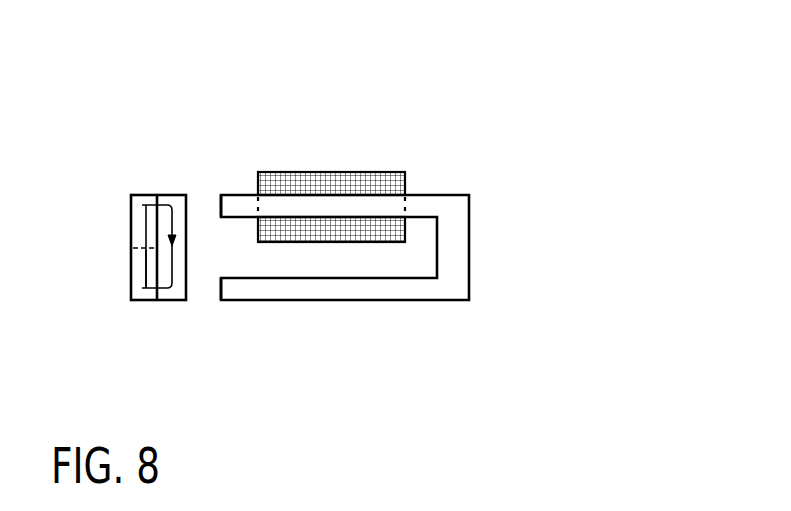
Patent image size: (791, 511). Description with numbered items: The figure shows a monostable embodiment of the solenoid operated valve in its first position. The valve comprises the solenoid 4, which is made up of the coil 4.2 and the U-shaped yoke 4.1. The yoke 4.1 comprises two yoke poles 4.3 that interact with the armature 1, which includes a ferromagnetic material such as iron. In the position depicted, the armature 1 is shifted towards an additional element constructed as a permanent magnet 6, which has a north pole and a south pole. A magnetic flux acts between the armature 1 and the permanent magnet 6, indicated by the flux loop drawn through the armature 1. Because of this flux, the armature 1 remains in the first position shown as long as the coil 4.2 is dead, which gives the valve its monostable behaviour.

The solenoid 4 is at (450, 65).
The U-shaped yoke 4.1 is at (457, 203).
The coil 4.2 is at (312, 185).
The yoke poles 4.3 is at (228, 282).
The armature 1 is at (180, 292).
The permanent magnet 6 is at (140, 207).